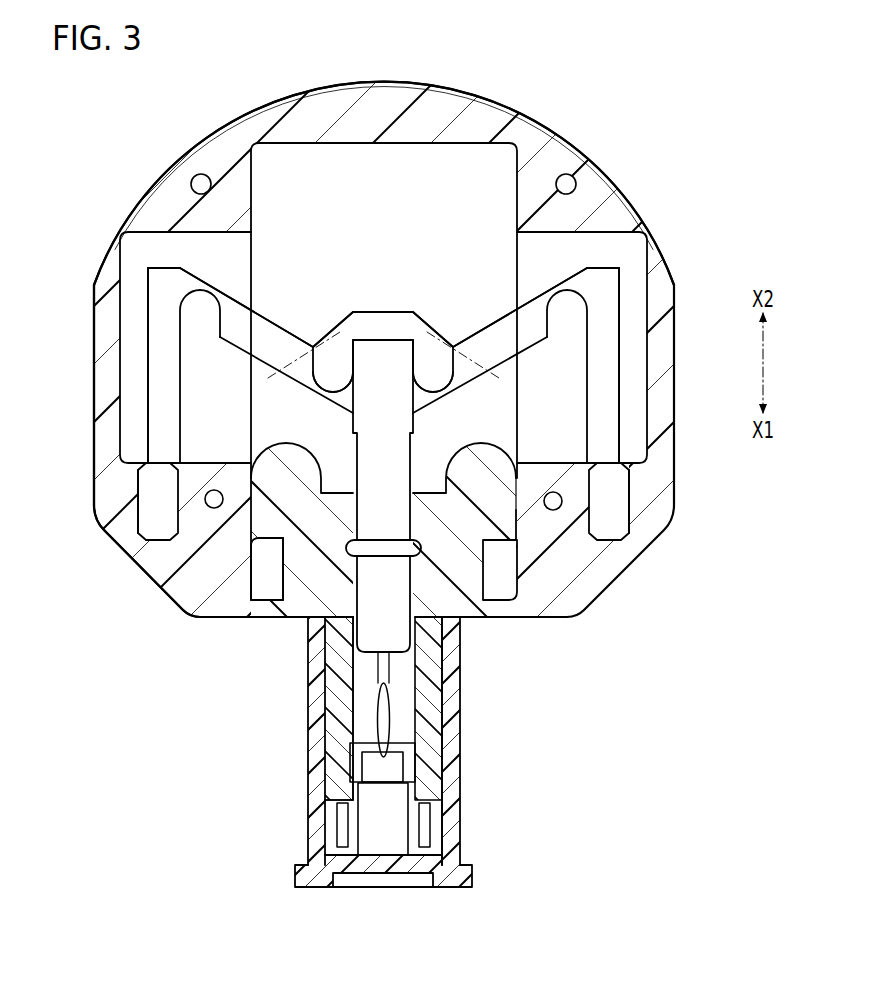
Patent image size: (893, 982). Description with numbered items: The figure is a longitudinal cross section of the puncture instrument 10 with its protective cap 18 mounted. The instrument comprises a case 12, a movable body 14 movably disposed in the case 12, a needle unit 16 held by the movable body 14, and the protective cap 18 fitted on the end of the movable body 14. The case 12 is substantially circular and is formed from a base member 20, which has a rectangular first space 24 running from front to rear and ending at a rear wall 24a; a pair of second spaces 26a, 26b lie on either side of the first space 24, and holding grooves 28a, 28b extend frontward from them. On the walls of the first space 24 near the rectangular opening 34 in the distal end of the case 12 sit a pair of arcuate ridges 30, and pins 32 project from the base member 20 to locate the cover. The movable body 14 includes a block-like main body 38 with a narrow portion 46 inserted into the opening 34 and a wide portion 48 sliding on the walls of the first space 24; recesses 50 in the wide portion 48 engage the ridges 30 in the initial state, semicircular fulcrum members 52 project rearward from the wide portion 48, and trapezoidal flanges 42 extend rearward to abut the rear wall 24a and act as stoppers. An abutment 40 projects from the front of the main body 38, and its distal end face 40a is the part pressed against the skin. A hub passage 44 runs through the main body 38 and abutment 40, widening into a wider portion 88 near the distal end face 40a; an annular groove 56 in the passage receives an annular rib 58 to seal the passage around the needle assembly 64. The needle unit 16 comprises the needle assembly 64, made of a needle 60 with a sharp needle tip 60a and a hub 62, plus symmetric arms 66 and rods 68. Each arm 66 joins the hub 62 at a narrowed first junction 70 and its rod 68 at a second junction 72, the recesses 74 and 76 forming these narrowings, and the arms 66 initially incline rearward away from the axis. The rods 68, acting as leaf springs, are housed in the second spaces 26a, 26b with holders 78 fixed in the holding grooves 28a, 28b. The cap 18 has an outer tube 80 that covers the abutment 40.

The puncture instrument 10 is at (679, 89).
The case 12 is at (626, 165).
The movable body 14 is at (281, 625).
The needle unit 16 is at (630, 300).
The protective cap 18 is at (397, 893).
The base member 20 is at (239, 127).
The first space 24 is at (333, 165).
The rear wall 24a is at (413, 160).
The second space 26a is at (135, 333).
The second space 26b is at (632, 333).
The holding groove 28a is at (150, 505).
The holding groove 28b is at (617, 505).
The ridge 30 is at (262, 490).
The pin 32 is at (563, 173).
The opening 34 is at (468, 622).
The main body 38 is at (510, 585).
The abutment 40 is at (427, 730).
The distal end face 40a is at (330, 808).
The flange 42 is at (387, 320).
The hub passage 44 is at (365, 718).
The narrow portion 46 is at (295, 583).
The wide portion 48 is at (268, 542).
The recess 50 is at (228, 512).
The fulcrum member 52 is at (250, 440).
The annular groove 56 is at (357, 548).
The annular rib 58 is at (376, 552).
The needle 60 is at (385, 707).
The needle tip 60a is at (390, 760).
The hub 62 is at (401, 580).
The needle assembly 64 is at (346, 607).
The arm 66 is at (288, 340).
The rod 68 is at (168, 384).
The first junction 70 is at (345, 398).
The second junction 72 is at (158, 280).
The recess 74 is at (333, 392).
The recess 76 is at (203, 292).
The holder 78 is at (140, 497).
The outer tube 80 is at (447, 776).
The wider portion 88 is at (350, 762).